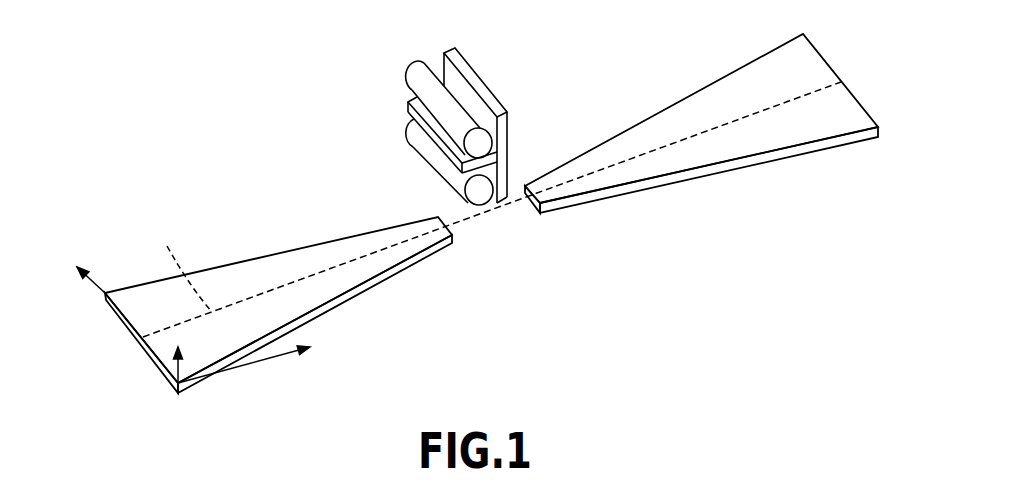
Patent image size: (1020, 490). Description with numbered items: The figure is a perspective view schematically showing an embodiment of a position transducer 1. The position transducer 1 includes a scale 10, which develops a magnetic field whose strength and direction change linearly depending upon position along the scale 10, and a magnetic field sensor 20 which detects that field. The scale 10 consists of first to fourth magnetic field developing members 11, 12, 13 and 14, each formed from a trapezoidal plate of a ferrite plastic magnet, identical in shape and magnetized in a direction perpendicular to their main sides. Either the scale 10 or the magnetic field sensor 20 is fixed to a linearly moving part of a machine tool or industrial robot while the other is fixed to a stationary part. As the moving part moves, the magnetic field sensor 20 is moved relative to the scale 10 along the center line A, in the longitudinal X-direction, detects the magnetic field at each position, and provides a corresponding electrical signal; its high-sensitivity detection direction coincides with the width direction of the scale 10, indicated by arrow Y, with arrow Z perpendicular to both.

The position transducer 1 is at (305, 148).
The scale 10 is at (482, 272).
The first magnetic field developing member 11 is at (230, 278).
The second magnetic field developing member 12 is at (262, 320).
The third magnetic field developing member 13 is at (688, 112).
The fourth magnetic field developing member 14 is at (720, 153).
The magnetic field sensor 20 is at (512, 75).